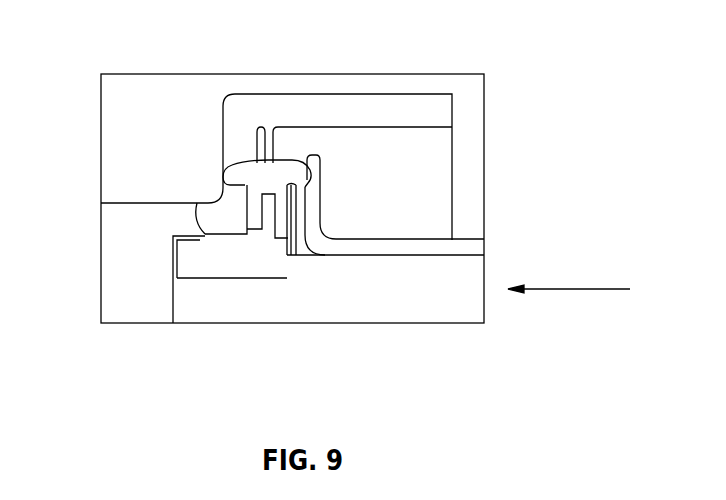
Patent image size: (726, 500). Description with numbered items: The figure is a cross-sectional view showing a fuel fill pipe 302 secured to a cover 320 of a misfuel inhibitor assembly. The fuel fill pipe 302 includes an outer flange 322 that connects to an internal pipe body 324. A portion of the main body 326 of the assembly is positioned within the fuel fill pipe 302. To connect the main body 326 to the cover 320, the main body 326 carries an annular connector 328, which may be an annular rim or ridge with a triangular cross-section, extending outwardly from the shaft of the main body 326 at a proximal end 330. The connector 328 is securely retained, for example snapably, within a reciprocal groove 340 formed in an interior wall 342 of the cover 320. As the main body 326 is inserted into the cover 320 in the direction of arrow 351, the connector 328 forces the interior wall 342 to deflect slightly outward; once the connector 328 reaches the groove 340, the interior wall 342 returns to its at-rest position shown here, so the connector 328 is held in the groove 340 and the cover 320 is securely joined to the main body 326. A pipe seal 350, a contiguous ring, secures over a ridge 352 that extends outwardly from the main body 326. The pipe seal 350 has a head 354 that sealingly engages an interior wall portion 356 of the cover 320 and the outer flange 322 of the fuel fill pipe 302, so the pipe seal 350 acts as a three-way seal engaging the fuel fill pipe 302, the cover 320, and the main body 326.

The fuel fill pipe 302 is at (472, 243).
The cover 320 is at (133, 210).
The outer flange 322 is at (315, 160).
The internal pipe body 324 is at (432, 250).
The main body 326 is at (237, 258).
The annular connector 328 is at (198, 232).
The proximal end 330 is at (183, 265).
The reciprocal groove 340 is at (197, 200).
The interior wall 342 is at (147, 220).
The pipe seal 350 is at (262, 160).
The arrow 351 is at (570, 290).
The ridge 352 is at (268, 213).
The head 354 is at (250, 163).
The interior wall portion 356 is at (232, 158).